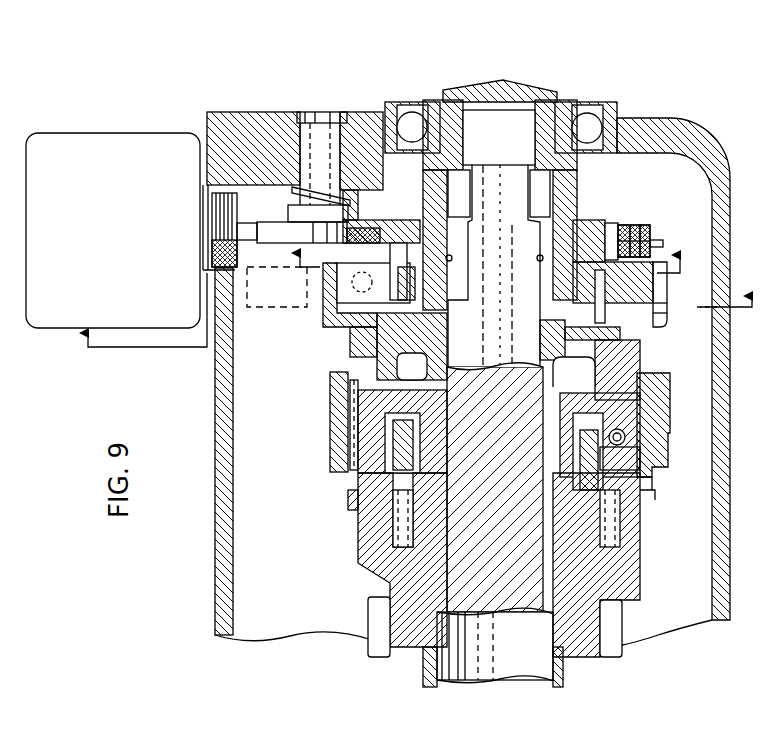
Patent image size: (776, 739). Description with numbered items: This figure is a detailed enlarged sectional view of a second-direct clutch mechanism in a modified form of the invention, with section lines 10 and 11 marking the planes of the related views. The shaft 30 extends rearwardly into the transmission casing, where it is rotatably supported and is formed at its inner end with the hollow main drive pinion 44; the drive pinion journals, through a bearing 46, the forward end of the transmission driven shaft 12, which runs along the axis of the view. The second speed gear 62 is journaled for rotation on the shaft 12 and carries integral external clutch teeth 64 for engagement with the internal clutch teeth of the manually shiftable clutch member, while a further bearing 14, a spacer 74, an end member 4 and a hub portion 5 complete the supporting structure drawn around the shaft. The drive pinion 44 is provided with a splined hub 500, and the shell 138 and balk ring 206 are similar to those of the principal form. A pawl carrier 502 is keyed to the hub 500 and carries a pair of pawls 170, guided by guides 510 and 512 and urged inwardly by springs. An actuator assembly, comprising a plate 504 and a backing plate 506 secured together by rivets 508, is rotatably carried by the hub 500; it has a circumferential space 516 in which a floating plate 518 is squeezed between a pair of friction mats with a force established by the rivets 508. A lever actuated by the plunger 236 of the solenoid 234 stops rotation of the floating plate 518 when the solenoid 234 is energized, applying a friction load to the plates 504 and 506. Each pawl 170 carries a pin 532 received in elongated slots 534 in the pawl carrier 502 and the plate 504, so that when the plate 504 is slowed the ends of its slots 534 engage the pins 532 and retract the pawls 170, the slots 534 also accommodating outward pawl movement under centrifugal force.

The housing end plate 4 is at (677, 428).
The rotor hub 5 is at (590, 533).
The section line 10 is at (297, 276).
The section line 11 is at (414, 314).
The transmission driven shaft 12 is at (510, 492).
The bearing 14 is at (588, 455).
The shaft 30 is at (537, 90).
The main drive pinion 44 is at (588, 125).
The bearing 46 is at (525, 170).
The second speed gear 62 is at (613, 643).
The external clutch teeth 64 is at (622, 505).
The spacer 74 is at (640, 483).
The shell 138 is at (662, 328).
The pawls 170 is at (630, 303).
The balk ring 206 is at (583, 335).
The solenoid 234 is at (135, 158).
The plunger 236 is at (250, 225).
The splined hub 500 is at (540, 300).
The pawl carrier 502 is at (660, 262).
The plate 504 is at (572, 236).
The backing plate 506 is at (645, 245).
The rivets 508 is at (622, 235).
The guide 510 is at (633, 240).
The guide 512 is at (660, 308).
The circumferential space 516 is at (642, 238).
The floating plate 518 is at (650, 250).
The pin 532 is at (340, 372).
The elongated slots 534 is at (395, 240).